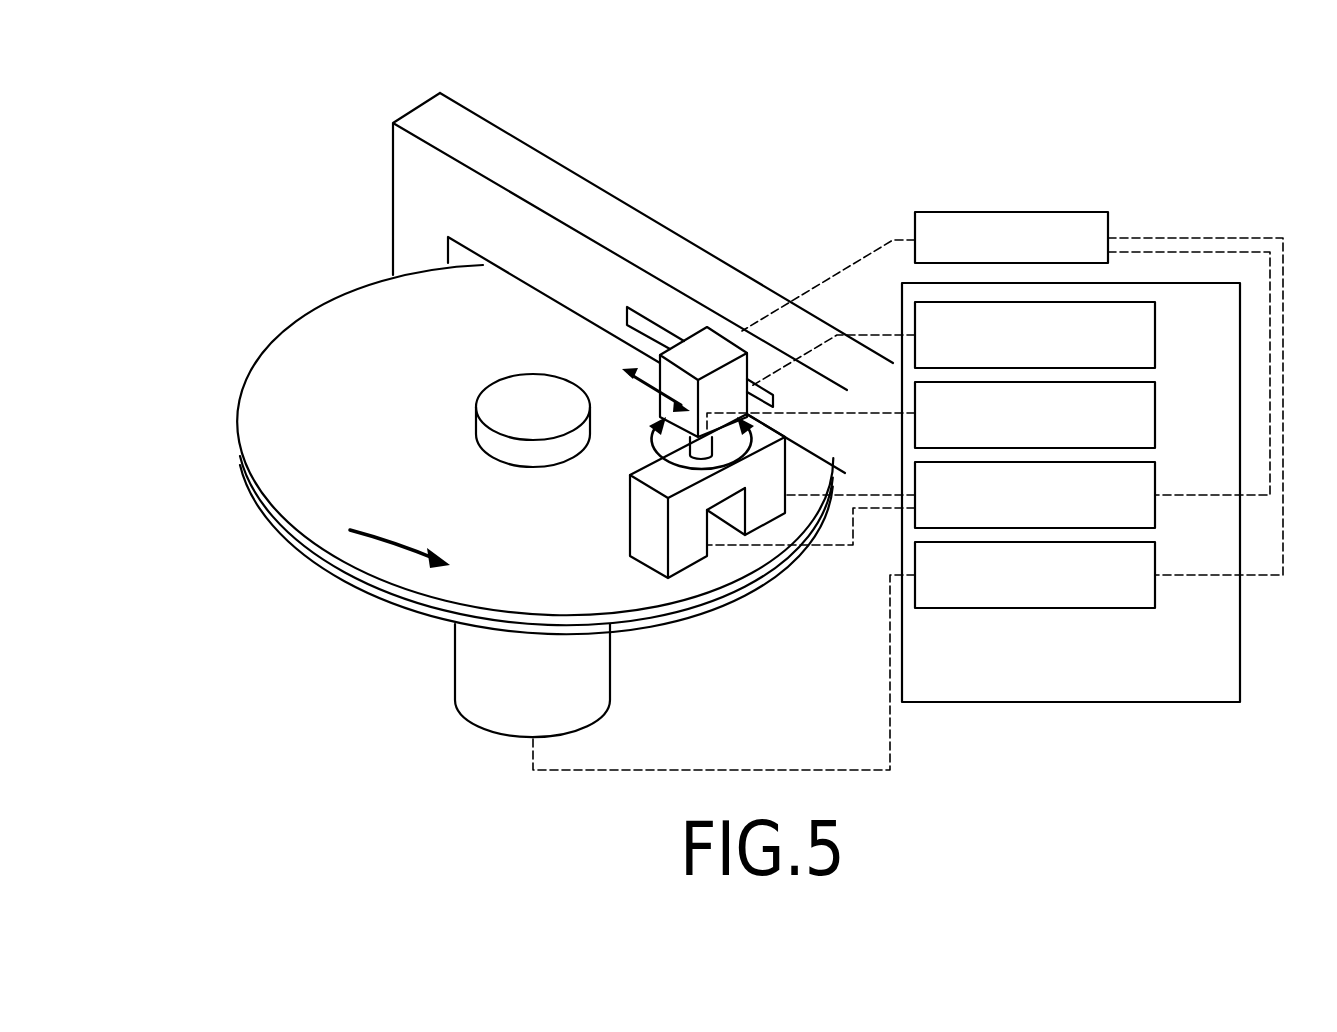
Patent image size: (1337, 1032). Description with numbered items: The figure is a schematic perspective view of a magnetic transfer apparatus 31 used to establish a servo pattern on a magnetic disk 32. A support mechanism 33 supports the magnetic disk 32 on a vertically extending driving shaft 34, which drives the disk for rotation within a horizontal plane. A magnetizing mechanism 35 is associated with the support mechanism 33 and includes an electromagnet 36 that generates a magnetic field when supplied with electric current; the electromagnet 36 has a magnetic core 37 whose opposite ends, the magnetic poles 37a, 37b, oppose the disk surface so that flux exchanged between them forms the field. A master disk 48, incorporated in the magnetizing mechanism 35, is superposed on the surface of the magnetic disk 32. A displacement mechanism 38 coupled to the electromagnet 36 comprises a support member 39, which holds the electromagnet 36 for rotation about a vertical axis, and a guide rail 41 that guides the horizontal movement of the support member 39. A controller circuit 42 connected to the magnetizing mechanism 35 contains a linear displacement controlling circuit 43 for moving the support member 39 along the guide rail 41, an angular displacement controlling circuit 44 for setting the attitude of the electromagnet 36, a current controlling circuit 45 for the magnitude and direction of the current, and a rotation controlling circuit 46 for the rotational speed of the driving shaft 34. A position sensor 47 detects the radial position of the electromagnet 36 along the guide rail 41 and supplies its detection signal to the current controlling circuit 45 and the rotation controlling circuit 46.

The magnetic transfer apparatus 31 is at (360, 143).
The magnetic disk 32 is at (343, 585).
The support mechanism 33 is at (368, 648).
The driving shaft 34 is at (455, 660).
The magnetizing mechanism 35 is at (517, 492).
The electromagnet 36 is at (655, 470).
The magnetic core 37 is at (630, 520).
The magnetic pole 37a is at (647, 570).
The magnetic pole 37b is at (767, 523).
The displacement mechanism 38 is at (762, 268).
The support member 39 is at (647, 362).
The guide rail 41 is at (530, 287).
The controller circuit 42 is at (1240, 647).
The linear displacement controlling circuit 43 is at (1155, 320).
The angular displacement controlling circuit 44 is at (1155, 400).
The current controlling circuit 45 is at (1155, 515).
The rotation controlling circuit 46 is at (1155, 597).
The position sensor 47 is at (1108, 225).
The master disk 48 is at (343, 303).